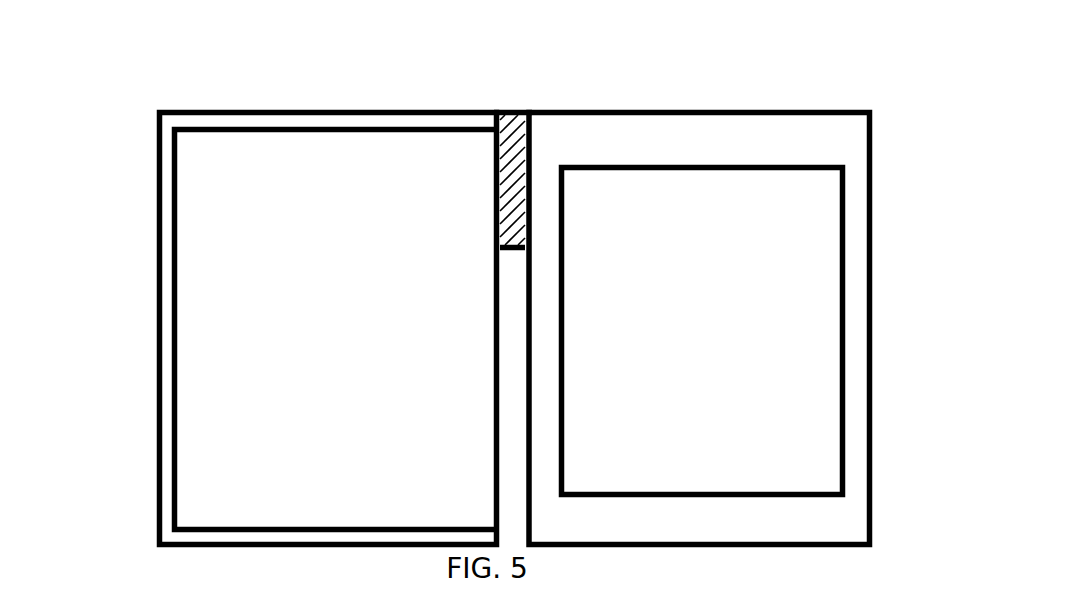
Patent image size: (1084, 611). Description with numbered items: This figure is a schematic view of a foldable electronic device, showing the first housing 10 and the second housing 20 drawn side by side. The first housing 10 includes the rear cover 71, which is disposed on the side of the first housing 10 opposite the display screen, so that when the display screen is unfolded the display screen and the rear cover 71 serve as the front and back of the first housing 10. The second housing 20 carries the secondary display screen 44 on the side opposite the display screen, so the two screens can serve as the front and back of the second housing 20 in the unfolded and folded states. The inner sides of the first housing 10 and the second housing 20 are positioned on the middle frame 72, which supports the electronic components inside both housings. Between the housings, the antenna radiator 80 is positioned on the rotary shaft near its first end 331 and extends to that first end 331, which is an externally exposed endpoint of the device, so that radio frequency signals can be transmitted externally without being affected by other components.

The first housing 10 is at (268, 293).
The second housing 20 is at (746, 293).
The first end 331 is at (517, 115).
The antenna radiator 80 is at (515, 143).
The middle frame 72 is at (157, 190).
The rear cover 71 is at (278, 307).
The secondary display screen 44 is at (785, 223).